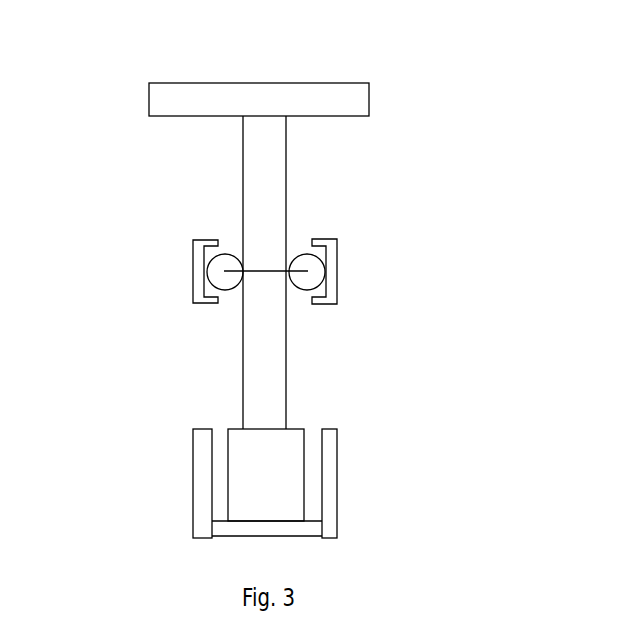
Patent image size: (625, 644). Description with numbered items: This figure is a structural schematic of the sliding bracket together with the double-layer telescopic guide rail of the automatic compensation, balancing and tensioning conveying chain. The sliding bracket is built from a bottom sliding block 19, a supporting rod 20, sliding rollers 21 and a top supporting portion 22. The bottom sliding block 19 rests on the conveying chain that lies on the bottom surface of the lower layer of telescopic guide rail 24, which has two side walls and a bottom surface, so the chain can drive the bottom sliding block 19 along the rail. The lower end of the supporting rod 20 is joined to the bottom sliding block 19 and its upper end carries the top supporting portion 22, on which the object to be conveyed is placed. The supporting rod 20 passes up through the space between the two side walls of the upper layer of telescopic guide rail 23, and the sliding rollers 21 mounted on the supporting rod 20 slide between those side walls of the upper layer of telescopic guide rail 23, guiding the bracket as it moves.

The bottom sliding block 19 is at (270, 467).
The supporting rod 20 is at (270, 346).
The sliding roller 21 is at (302, 273).
The top supporting portion 22 is at (355, 100).
The upper layer of telescopic guide rail 23 is at (190, 277).
The lower layer of telescopic guide rail 24 is at (195, 489).